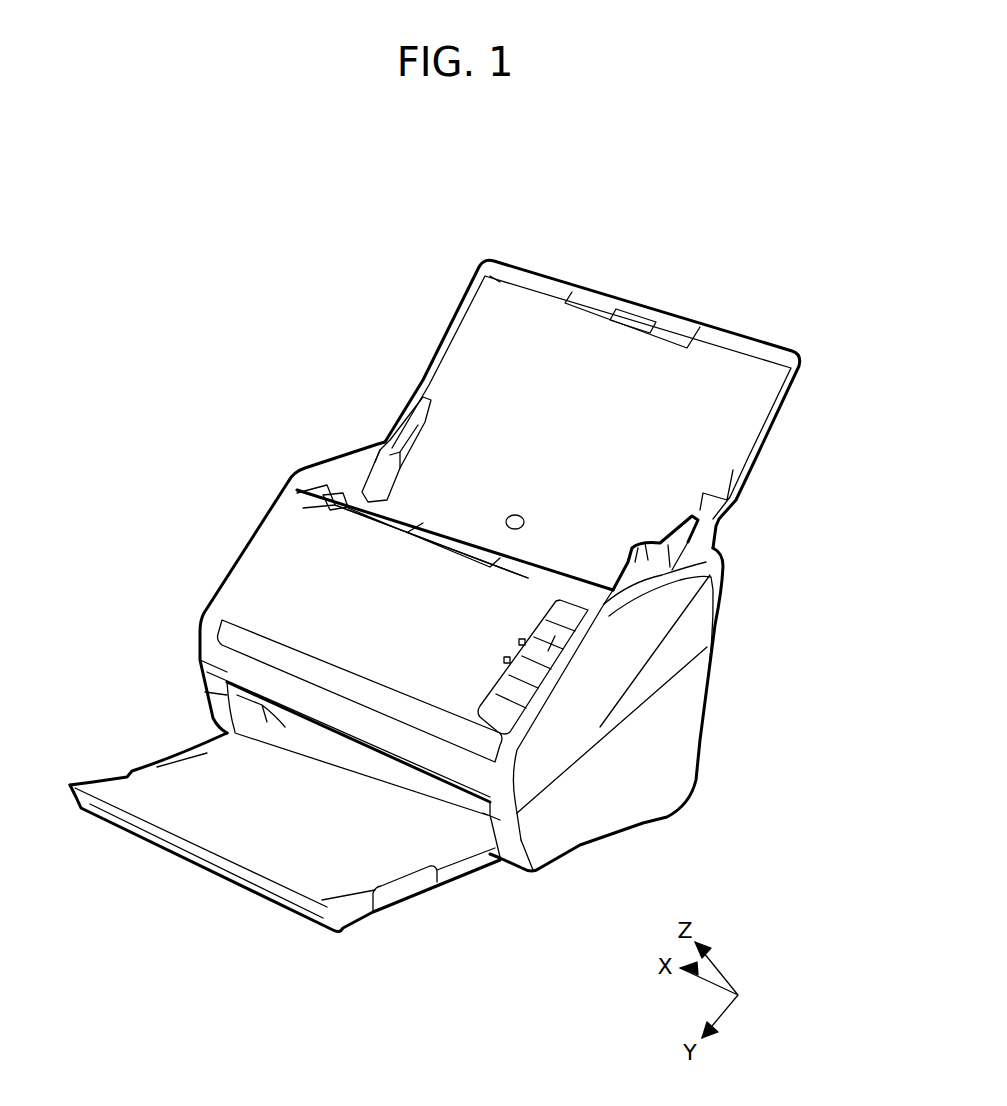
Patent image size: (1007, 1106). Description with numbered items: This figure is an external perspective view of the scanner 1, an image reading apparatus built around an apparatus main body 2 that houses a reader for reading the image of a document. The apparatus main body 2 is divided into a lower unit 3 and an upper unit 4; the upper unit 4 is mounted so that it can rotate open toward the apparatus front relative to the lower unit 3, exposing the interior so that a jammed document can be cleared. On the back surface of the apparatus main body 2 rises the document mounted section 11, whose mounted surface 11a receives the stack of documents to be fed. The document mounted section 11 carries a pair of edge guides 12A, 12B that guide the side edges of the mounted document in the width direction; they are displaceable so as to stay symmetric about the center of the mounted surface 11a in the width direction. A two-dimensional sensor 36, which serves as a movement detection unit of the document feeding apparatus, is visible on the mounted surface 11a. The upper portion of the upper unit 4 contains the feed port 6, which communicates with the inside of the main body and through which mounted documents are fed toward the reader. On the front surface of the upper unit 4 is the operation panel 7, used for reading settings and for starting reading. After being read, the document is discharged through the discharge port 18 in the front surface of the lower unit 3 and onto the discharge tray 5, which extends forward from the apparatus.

The scanner 1 is at (290, 234).
The apparatus main body 2 is at (645, 905).
The lower unit 3 is at (613, 797).
The upper unit 4 is at (563, 753).
The discharge tray 5 is at (387, 872).
The feed port 6 is at (453, 505).
The operation panel 7 is at (560, 668).
The document mounted section 11 is at (543, 262).
The mounted surface 11a is at (502, 290).
The edge guide 12A is at (388, 432).
The edge guide 12B is at (640, 560).
The discharge port 18 is at (292, 735).
The two-dimensional sensor 36 is at (527, 524).